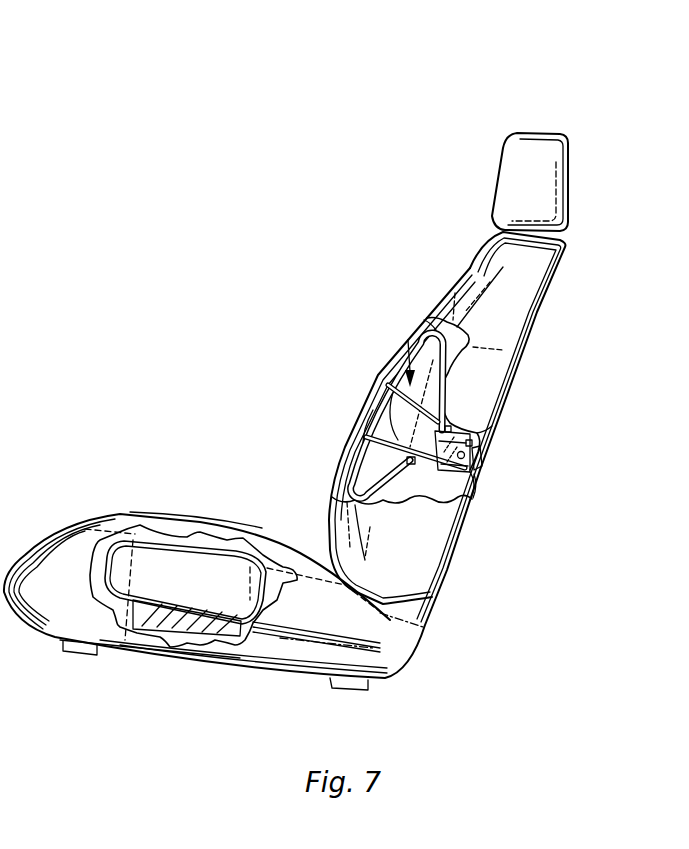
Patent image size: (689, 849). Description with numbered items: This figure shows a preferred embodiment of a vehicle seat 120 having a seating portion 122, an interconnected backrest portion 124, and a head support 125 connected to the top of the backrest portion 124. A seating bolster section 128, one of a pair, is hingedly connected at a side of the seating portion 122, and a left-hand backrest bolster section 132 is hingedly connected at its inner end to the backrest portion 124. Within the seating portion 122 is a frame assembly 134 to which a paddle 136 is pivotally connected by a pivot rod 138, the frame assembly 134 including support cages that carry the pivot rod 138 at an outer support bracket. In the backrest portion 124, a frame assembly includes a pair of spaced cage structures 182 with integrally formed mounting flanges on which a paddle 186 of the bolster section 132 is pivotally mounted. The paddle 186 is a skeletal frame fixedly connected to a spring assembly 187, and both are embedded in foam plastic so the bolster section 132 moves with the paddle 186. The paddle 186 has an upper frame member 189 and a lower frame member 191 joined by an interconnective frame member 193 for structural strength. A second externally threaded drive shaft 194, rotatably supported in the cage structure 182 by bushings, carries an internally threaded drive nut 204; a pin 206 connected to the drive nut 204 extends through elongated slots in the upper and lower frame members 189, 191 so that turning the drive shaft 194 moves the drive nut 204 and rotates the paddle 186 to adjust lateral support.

The vehicle seat 120 is at (570, 58).
The seating portion 122 is at (88, 506).
The backrest portion 124 is at (483, 303).
The head support 125 is at (556, 172).
The seating bolster section 128 is at (148, 517).
The left-hand backrest bolster section 132 is at (333, 488).
The frame assembly 134 is at (171, 650).
The paddle 136 is at (183, 545).
The pivot rod 138 is at (208, 640).
The cage structure 182 is at (484, 472).
The paddle 186 is at (412, 340).
The spring assembly 187 is at (425, 318).
The upper frame member 189 is at (385, 372).
The lower frame member 191 is at (376, 507).
The interconnective frame member 193 is at (380, 382).
The second externally threaded drive shaft 194 is at (487, 453).
The drive nut 204 is at (477, 488).
The pin 206 is at (500, 418).